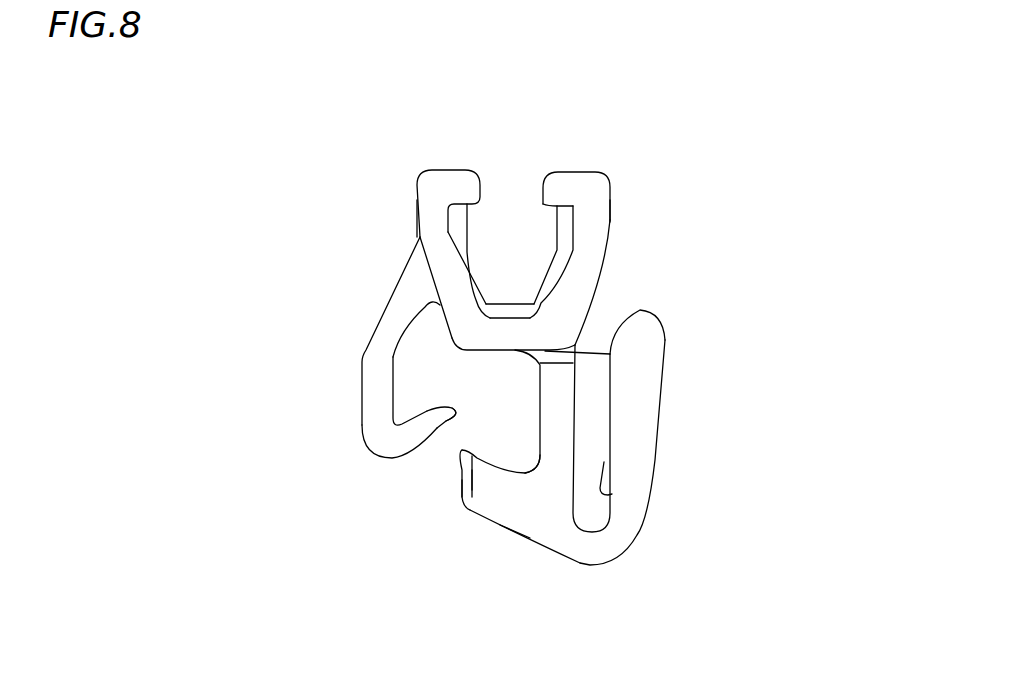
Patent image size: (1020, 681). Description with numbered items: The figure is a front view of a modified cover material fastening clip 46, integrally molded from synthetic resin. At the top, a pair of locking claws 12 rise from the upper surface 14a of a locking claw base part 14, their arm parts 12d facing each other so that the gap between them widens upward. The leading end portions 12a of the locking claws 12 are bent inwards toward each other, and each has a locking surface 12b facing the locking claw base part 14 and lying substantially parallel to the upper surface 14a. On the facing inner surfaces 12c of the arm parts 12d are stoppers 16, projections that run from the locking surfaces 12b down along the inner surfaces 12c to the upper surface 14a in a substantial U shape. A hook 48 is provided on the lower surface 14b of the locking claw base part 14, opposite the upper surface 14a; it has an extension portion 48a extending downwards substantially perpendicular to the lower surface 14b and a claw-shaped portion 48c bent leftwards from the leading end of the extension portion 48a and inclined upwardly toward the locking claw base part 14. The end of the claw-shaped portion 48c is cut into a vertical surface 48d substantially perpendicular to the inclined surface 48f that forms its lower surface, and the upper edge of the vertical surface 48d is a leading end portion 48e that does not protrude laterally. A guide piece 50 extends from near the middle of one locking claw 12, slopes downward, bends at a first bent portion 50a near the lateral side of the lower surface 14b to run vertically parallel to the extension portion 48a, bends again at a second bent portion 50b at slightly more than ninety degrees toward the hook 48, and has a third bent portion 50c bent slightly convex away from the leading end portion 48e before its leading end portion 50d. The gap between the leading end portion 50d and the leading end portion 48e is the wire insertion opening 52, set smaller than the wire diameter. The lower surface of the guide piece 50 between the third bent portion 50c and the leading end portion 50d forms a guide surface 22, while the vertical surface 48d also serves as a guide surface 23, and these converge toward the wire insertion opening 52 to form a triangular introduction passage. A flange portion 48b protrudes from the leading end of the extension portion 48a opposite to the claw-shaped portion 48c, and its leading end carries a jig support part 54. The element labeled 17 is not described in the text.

The cover material fastening clip 46 is at (708, 103).
The locking claw 12 is at (432, 267).
The leading end portion 12a is at (462, 183).
The locking surface 12b is at (458, 198).
The inner surface 12c is at (448, 228).
The arm part 12d is at (432, 233).
The locking claw base part 14 is at (480, 332).
The upper surface 14a is at (520, 317).
The lower surface 14b is at (610, 355).
The stopper 16 is at (487, 300).
The lower edge of connecting portion 17 is at (525, 458).
The guide surface 22 is at (450, 418).
The guide surface 23 is at (455, 483).
The hook 48 is at (575, 468).
The extension portion 48a is at (553, 418).
The flange portion 48b is at (570, 533).
The claw-shaped portion 48c is at (503, 497).
The vertical surface 48d is at (460, 468).
The leading end portion 48e is at (475, 492).
The inclined surface 48f is at (518, 533).
The guide piece 50 is at (360, 385).
The first bent portion 50a is at (370, 352).
The second bent portion 50b is at (378, 447).
The third bent portion 50c is at (393, 416).
The leading end portion 50d is at (400, 457).
The wire insertion opening 52 is at (460, 443).
The jig support part 54 is at (630, 388).